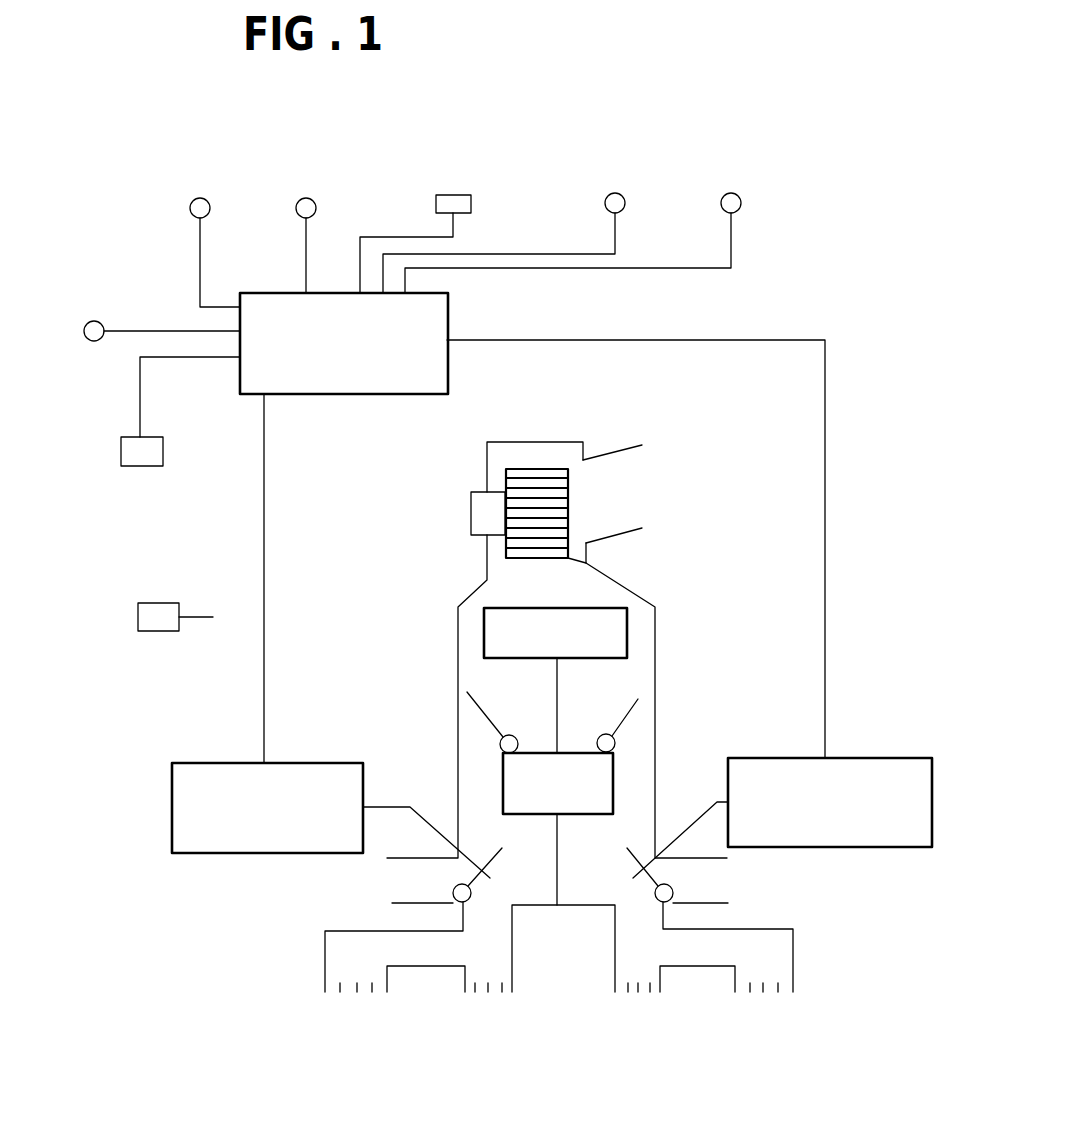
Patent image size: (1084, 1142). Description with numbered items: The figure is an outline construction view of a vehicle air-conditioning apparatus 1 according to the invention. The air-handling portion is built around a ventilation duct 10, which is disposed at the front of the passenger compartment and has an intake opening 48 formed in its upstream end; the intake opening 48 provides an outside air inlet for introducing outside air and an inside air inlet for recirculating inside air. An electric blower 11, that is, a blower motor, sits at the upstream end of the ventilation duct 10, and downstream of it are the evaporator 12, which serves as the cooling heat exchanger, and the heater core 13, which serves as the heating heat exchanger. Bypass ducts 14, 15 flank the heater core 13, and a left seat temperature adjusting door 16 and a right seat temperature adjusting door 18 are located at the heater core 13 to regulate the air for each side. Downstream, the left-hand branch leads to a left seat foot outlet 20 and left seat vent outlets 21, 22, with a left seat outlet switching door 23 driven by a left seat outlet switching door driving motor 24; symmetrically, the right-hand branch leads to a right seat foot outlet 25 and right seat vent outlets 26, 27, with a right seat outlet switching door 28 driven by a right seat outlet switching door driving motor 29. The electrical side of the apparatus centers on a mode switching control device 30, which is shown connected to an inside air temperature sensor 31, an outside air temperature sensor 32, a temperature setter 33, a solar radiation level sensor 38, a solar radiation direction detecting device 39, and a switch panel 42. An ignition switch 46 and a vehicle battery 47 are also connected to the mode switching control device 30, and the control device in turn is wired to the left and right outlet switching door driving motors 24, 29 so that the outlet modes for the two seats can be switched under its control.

The vehicle air-conditioning apparatus 1 is at (528, 88).
The ventilation duct 10 is at (473, 583).
The electric blower 11 is at (515, 470).
The evaporator 12 is at (557, 608).
The heater core 13 is at (573, 814).
The bypass duct 14 is at (482, 780).
The bypass duct 15 is at (630, 788).
The left seat temperature adjusting door 16 is at (490, 717).
The right seat temperature adjusting door 18 is at (620, 720).
The left seat foot outlet 20 is at (395, 883).
The left seat vent outlet 21 is at (332, 993).
The left seat vent outlet 22 is at (472, 993).
The left seat outlet switching door 23 is at (502, 852).
The left seat outlet switching door driving motor 24 is at (172, 809).
The right seat foot outlet 25 is at (713, 880).
The right seat vent outlet 26 is at (655, 993).
The right seat vent outlet 27 is at (758, 993).
The right seat outlet switching door 28 is at (633, 873).
The right seat outlet switching door driving motor 29 is at (885, 756).
The mode switching control device 30 is at (338, 394).
The inside air temperature sensor 31 is at (198, 198).
The outside air temperature sensor 32 is at (306, 198).
The temperature setter 33 is at (453, 195).
The solar radiation level sensor 38 is at (615, 193).
The solar radiation direction detecting device 39 is at (731, 193).
The switch panel 42 is at (140, 466).
The ignition switch 46 is at (94, 321).
The vehicle battery 47 is at (158, 631).
The intake opening 48 is at (642, 483).